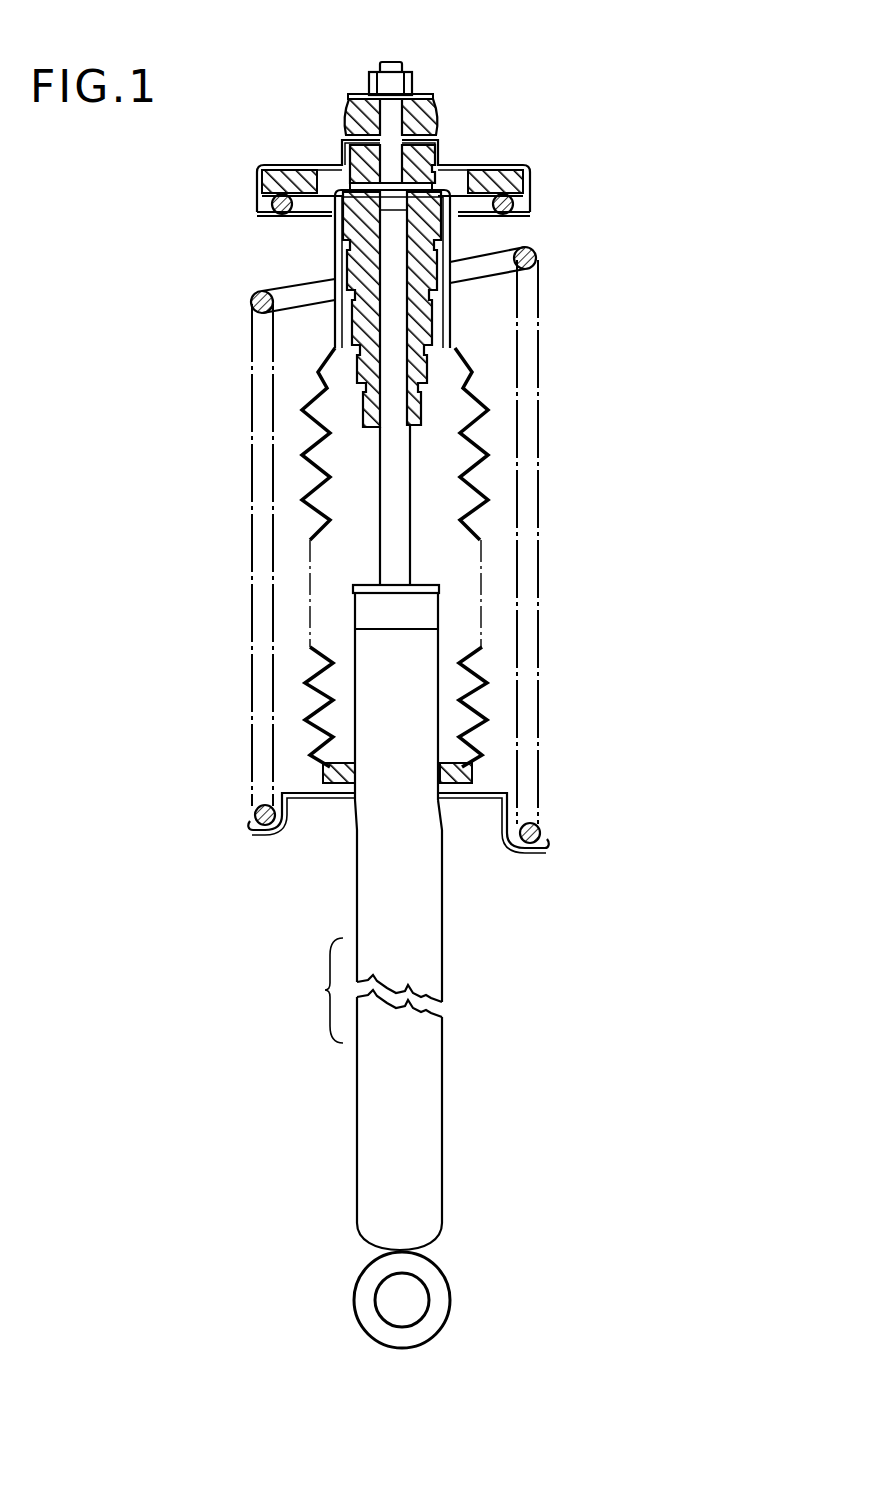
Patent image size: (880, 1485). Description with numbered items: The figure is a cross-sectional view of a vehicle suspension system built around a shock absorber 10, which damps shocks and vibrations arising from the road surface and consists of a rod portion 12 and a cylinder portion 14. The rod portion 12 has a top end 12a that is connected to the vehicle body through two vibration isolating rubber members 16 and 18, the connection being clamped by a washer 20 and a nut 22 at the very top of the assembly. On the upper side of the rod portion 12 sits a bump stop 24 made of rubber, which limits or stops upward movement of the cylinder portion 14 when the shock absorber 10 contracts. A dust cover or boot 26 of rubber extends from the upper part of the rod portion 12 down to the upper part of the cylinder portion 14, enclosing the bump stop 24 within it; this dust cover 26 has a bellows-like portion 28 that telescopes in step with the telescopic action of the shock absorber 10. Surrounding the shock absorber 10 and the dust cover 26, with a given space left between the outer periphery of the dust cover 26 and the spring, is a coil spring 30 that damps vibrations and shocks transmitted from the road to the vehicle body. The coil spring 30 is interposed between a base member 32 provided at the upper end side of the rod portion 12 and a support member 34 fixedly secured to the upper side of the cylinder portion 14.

The shock absorber 10 is at (443, 650).
The rod portion 12 is at (398, 482).
The top end 12a is at (389, 62).
The cylinder portion 14 is at (433, 902).
The vibration isolating rubber member 16 is at (350, 108).
The vibration isolating rubber member 18 is at (440, 147).
The washer 20 is at (420, 93).
The nut 22 is at (375, 81).
The bump stop 24 is at (434, 320).
The dust cover 26 is at (313, 395).
The bellows-like portion 28 is at (310, 467).
The coil spring 30 is at (254, 296).
The base member 32 is at (271, 166).
The support member 34 is at (306, 797).